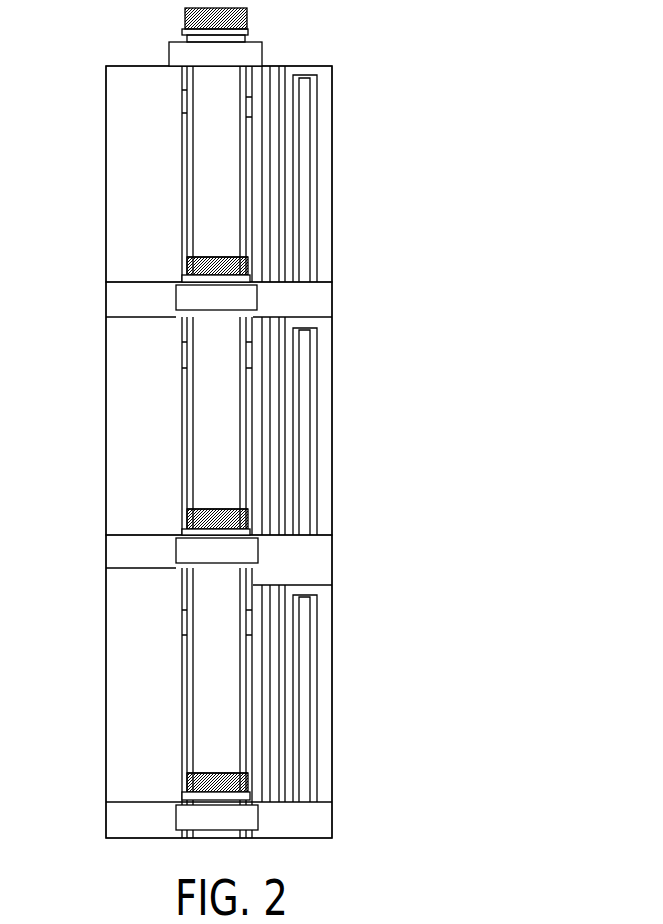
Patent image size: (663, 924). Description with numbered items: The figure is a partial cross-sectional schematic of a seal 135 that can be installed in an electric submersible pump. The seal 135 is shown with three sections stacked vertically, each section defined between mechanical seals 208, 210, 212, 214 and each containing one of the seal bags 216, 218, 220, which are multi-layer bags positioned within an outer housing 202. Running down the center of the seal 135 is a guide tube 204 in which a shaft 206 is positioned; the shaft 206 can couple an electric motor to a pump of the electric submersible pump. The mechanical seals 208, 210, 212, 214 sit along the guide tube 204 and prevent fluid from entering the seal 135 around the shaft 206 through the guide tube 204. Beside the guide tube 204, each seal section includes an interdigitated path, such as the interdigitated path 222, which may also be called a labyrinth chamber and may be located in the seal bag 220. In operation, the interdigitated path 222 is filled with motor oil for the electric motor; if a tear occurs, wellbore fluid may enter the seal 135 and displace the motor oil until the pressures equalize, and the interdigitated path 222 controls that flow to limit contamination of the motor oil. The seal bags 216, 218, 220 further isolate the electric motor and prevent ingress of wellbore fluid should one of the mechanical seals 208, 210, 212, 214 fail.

The seal 135 is at (548, 370).
The outer housing 202 is at (332, 342).
The guide tube 204 is at (253, 123).
The shaft 206 is at (222, 228).
The mechanical seal 208 is at (243, 52).
The mechanical seal 210 is at (232, 298).
The mechanical seal 212 is at (222, 555).
The mechanical seal 214 is at (222, 815).
The seal bag 216 is at (112, 176).
The seal bag 218 is at (112, 402).
The seal bag 220 is at (112, 702).
The interdigitated path 222 is at (317, 428).